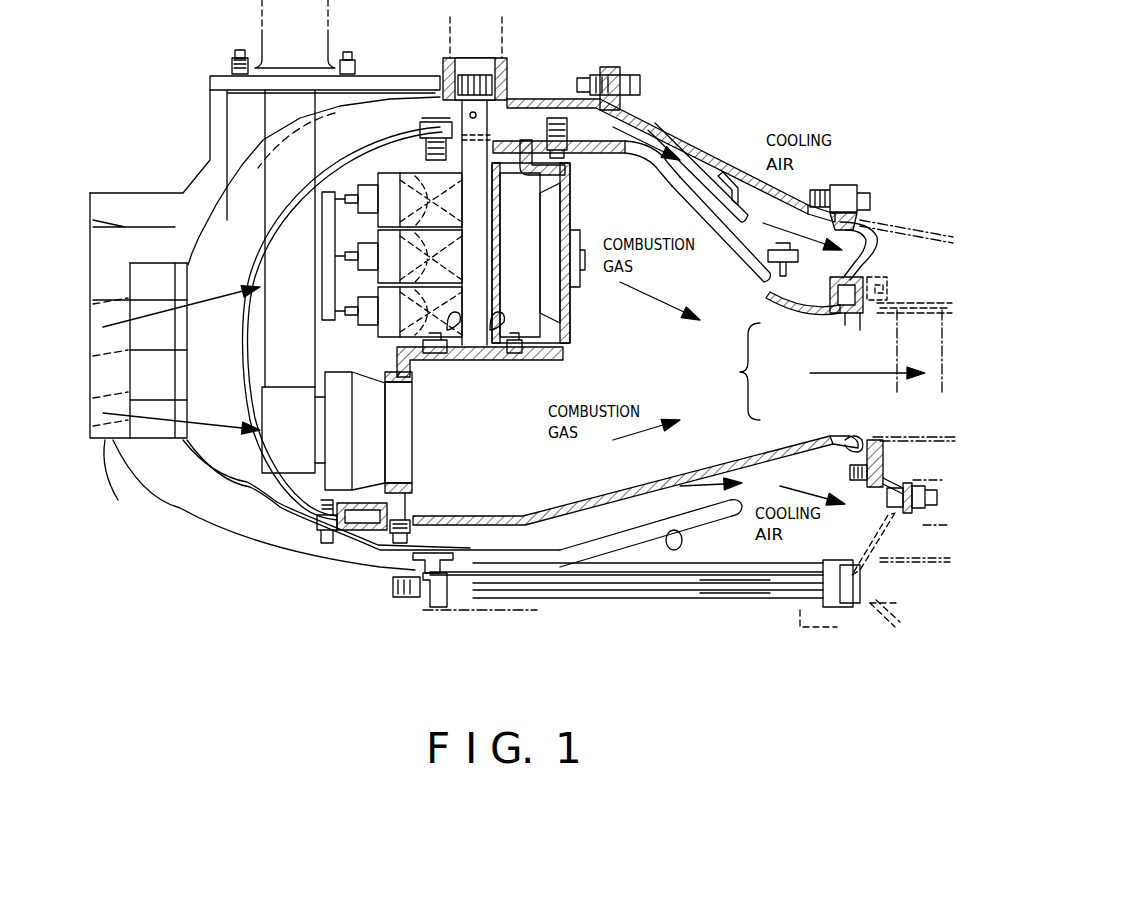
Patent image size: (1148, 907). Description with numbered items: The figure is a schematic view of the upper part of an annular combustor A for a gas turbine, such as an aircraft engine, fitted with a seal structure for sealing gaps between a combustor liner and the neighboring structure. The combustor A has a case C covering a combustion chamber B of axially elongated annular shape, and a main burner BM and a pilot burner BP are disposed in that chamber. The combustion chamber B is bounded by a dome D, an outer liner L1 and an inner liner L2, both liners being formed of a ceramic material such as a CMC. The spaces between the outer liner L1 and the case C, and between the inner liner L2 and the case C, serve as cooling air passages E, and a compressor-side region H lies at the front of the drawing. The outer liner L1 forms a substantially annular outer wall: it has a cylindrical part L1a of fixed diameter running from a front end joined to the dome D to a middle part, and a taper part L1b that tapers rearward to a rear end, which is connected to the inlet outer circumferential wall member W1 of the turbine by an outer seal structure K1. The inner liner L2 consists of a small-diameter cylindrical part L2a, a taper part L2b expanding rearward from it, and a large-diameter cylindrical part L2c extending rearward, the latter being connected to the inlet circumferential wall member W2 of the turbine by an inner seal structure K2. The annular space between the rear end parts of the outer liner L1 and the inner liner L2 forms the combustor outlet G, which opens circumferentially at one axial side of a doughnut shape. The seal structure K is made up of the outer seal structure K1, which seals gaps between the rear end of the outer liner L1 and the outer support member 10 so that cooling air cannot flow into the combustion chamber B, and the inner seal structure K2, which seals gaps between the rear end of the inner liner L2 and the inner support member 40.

The annular combustor A is at (848, 40).
The combustion chamber B is at (622, 204).
The case C is at (657, 123).
The outer support member 10 is at (893, 228).
The cylindrical part L1a is at (590, 133).
The outer liner L1 is at (693, 180).
The taper part L1b is at (733, 214).
The cooling air passages E is at (747, 223).
The main burner BM is at (572, 285).
The pilot burner BP is at (412, 428).
The inlet outer circumferential wall member W1 is at (910, 302).
The inlet circumferential wall member W2 is at (893, 449).
The seal structure K is at (741, 371).
The outer seal structure K1 is at (803, 308).
The inner seal structure K2 is at (827, 437).
The combustor outlet G is at (857, 353).
The compressor discharge housing H is at (118, 390).
The dome D is at (372, 545).
The small-diameter cylindrical part L2a is at (430, 523).
The inner liner L2 is at (587, 513).
The taper part L2b is at (650, 490).
The large-diameter cylindrical part L2c is at (833, 433).
The inner support member 40 is at (877, 497).